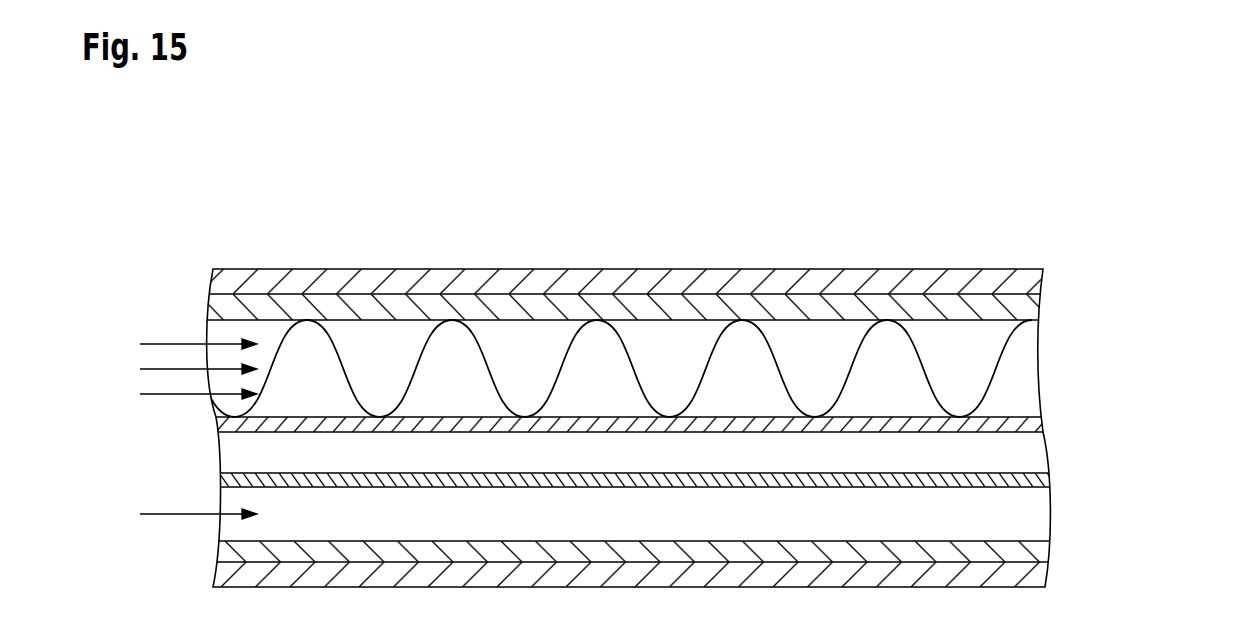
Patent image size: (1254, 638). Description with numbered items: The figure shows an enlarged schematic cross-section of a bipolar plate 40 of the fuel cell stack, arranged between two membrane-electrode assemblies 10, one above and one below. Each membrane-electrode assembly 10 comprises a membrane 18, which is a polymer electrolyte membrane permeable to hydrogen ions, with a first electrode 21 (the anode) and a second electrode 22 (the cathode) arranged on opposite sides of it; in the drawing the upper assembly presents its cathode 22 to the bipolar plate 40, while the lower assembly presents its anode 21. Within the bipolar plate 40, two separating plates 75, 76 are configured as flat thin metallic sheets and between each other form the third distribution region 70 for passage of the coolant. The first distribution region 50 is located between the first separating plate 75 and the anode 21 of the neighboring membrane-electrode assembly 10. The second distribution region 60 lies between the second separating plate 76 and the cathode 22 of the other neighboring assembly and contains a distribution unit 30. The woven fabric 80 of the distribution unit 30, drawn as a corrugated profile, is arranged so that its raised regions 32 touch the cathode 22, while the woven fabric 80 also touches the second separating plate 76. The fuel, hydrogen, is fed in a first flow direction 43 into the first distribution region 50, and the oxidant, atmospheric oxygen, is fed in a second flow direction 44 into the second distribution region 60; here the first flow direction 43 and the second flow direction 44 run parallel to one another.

The membrane-electrode assembly 10 is at (1170, 238).
The membrane 18 is at (1024, 284).
The second electrode 22 is at (1036, 306).
The first electrode 21 is at (1028, 549).
The distribution unit 30 is at (493, 377).
The raised regions 32 is at (310, 320).
The woven fabric 80 is at (635, 377).
The second distribution region 60 is at (1057, 367).
The second separating plate 76 is at (1032, 428).
The third distribution region 70 is at (1057, 452).
The first separating plate 75 is at (1036, 480).
The first distribution region 50 is at (1057, 517).
The bipolar plate 40 is at (1170, 320).
The second flow direction 44 is at (164, 335).
The first flow direction 43 is at (163, 517).